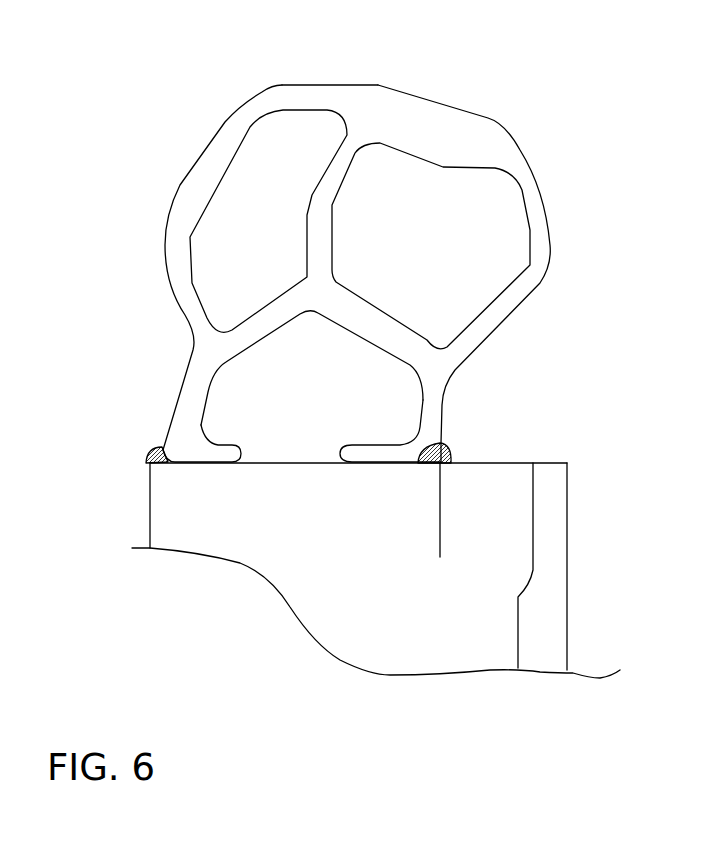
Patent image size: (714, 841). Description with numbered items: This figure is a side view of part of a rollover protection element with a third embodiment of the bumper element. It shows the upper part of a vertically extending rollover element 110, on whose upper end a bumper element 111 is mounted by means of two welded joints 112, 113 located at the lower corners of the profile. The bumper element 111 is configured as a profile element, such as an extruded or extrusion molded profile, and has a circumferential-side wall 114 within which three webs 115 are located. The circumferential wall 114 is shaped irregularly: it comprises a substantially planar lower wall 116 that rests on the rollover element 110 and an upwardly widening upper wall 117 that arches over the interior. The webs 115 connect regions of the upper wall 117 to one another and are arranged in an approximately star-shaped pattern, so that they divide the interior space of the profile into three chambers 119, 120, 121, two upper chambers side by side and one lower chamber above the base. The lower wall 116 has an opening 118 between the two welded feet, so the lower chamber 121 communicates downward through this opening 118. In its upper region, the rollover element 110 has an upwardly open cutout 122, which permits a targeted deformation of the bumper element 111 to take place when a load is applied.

The rollover element 110 is at (182, 527).
The bumper element 111 is at (450, 118).
The welded joint 112 is at (152, 455).
The welded joint 113 is at (446, 454).
The circumferential-side wall 114 is at (228, 138).
The web 115 is at (322, 233).
The lower wall 116 is at (215, 455).
The upper wall 117 is at (300, 92).
The opening 118 is at (292, 442).
The chamber 119 is at (228, 218).
The chamber 120 is at (440, 243).
The chamber 121 is at (318, 413).
The cutout 122 is at (490, 522).